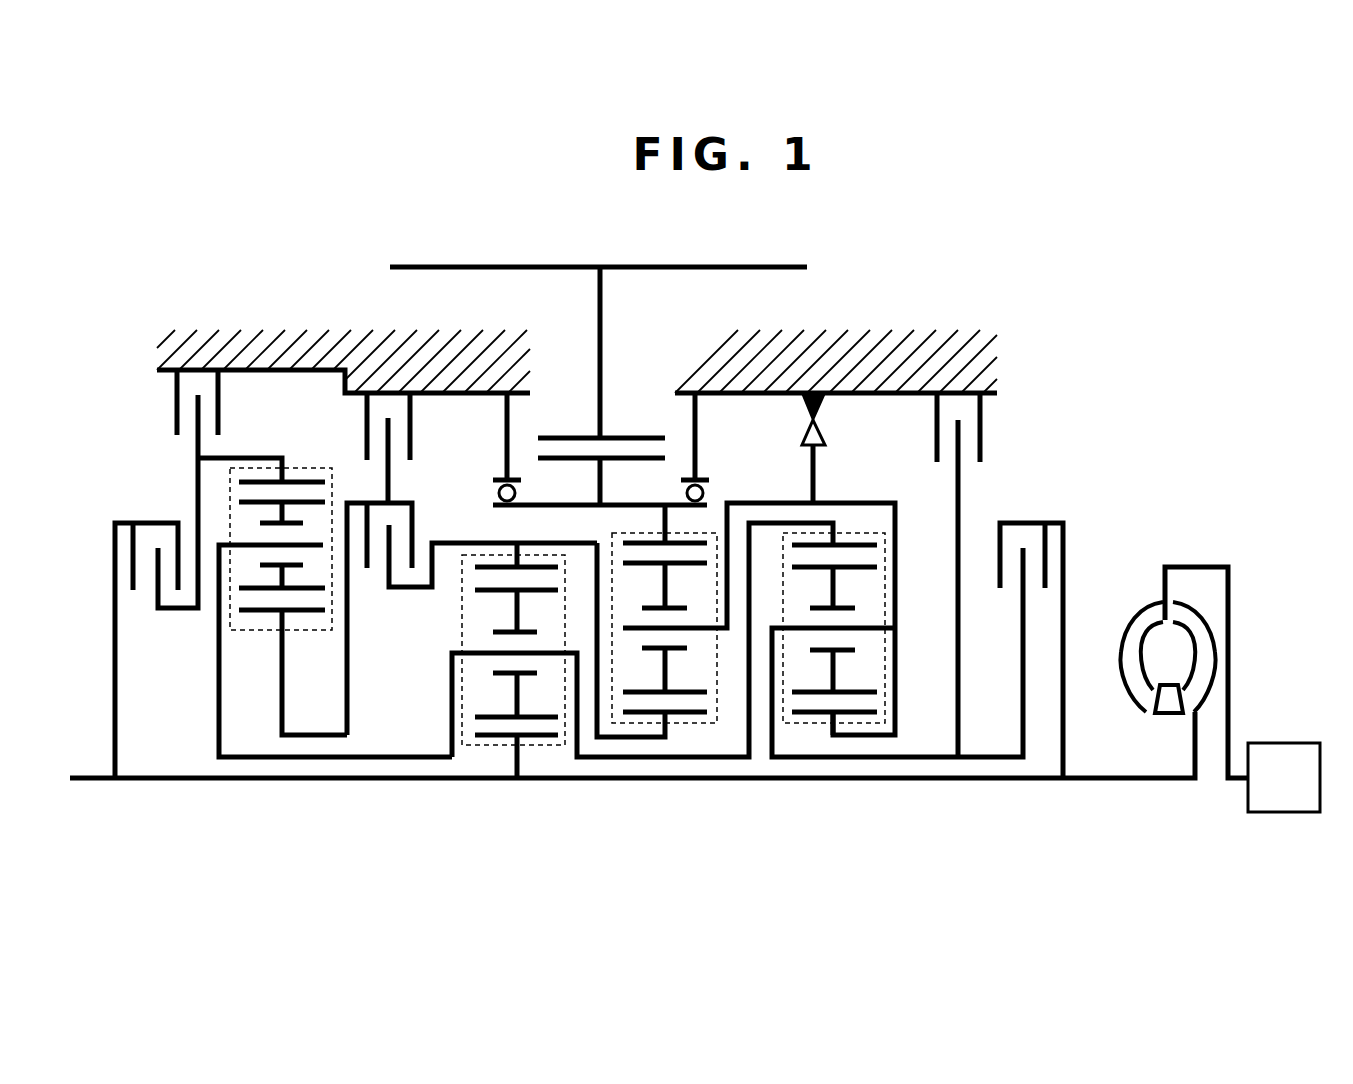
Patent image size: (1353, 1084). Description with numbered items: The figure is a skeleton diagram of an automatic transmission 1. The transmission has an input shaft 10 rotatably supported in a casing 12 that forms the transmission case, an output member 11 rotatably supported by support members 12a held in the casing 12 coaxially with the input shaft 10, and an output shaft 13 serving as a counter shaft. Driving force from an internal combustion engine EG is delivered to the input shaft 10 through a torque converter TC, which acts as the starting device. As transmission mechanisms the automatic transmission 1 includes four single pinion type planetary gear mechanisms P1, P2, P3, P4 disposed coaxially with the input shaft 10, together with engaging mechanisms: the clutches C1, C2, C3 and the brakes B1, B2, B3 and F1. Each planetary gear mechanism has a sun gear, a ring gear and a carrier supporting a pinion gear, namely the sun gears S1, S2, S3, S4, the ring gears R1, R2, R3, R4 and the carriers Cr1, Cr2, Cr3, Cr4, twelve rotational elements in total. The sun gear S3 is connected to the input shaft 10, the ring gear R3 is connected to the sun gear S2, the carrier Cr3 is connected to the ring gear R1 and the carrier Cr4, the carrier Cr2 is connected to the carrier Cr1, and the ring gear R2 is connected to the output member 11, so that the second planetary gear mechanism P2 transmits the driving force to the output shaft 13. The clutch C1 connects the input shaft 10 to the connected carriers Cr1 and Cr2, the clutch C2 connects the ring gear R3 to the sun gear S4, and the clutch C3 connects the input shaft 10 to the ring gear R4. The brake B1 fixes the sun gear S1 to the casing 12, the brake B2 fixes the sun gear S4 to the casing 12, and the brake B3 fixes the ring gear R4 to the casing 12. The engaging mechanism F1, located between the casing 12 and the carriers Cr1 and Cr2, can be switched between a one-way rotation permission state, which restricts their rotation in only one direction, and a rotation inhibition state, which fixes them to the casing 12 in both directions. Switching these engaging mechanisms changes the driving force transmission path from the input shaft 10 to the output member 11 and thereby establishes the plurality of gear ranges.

The automatic transmission 1 is at (1152, 297).
The input shaft 10 is at (927, 780).
The output member 11 is at (603, 490).
The casing 12 is at (453, 337).
The support members 12a is at (505, 415).
The output shaft 13 is at (540, 263).
The brake B1 is at (1002, 423).
The brake B2 is at (347, 423).
The brake B3 is at (162, 422).
The clutch C1 is at (1077, 533).
The clutch C2 is at (432, 512).
The clutch C3 is at (152, 620).
The engaging mechanism F1 is at (828, 430).
The ring gear R1 is at (877, 545).
The ring gear R2 is at (700, 540).
The ring gear R3 is at (495, 562).
The ring gear R4 is at (310, 477).
The sun gear S1 is at (877, 712).
The sun gear S2 is at (678, 715).
The sun gear S3 is at (545, 737).
The sun gear S4 is at (312, 613).
The carrier Cr1 is at (895, 630).
The carrier Cr2 is at (698, 633).
The carrier Cr3 is at (472, 652).
The carrier Cr4 is at (313, 543).
The first planetary gear mechanism P1 is at (885, 670).
The second planetary gear mechanism P2 is at (703, 725).
The third planetary gear mechanism P3 is at (472, 747).
The fourth planetary gear mechanism P4 is at (250, 632).
The torque converter TC is at (1128, 712).
The internal combustion engine EG is at (1284, 777).